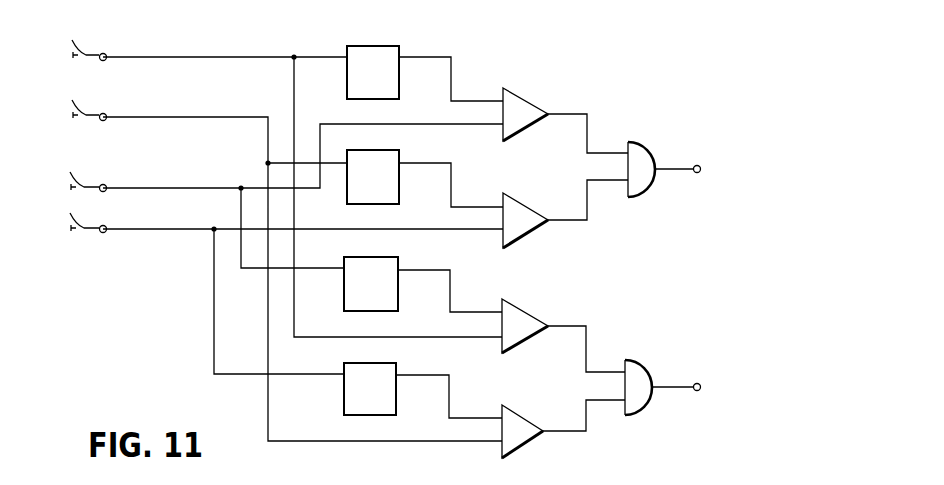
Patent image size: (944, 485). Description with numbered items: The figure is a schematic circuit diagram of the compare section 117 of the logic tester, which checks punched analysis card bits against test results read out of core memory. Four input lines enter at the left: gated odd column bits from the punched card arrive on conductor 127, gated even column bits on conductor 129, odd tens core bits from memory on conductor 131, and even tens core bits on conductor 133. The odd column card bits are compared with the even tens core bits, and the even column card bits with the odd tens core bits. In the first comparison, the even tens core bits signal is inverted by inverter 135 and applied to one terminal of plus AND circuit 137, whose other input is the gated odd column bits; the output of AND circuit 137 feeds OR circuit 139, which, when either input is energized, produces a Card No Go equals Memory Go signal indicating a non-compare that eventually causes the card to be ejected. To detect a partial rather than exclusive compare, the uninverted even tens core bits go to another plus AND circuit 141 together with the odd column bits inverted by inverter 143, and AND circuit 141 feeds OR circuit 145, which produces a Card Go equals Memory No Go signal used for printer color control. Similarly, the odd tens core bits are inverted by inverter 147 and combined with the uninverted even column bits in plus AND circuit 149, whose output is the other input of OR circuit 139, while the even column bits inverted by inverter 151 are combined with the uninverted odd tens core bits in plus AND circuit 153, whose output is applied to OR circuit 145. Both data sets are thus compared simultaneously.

The compare section 117 is at (588, 61).
The conductor 127 is at (145, 176).
The conductor 129 is at (134, 217).
The conductor 131 is at (128, 104).
The conductor 133 is at (128, 44).
The inverter 135 is at (399, 50).
The plus AND circuit 137 is at (526, 105).
The OR circuit 139 is at (650, 155).
The plus AND circuit 141 is at (518, 308).
The inverter 143 is at (399, 266).
The OR circuit 145 is at (647, 372).
The inverter 147 is at (400, 159).
The plus AND circuit 149 is at (523, 205).
The inverter 151 is at (397, 370).
The plus AND circuit 153 is at (517, 412).